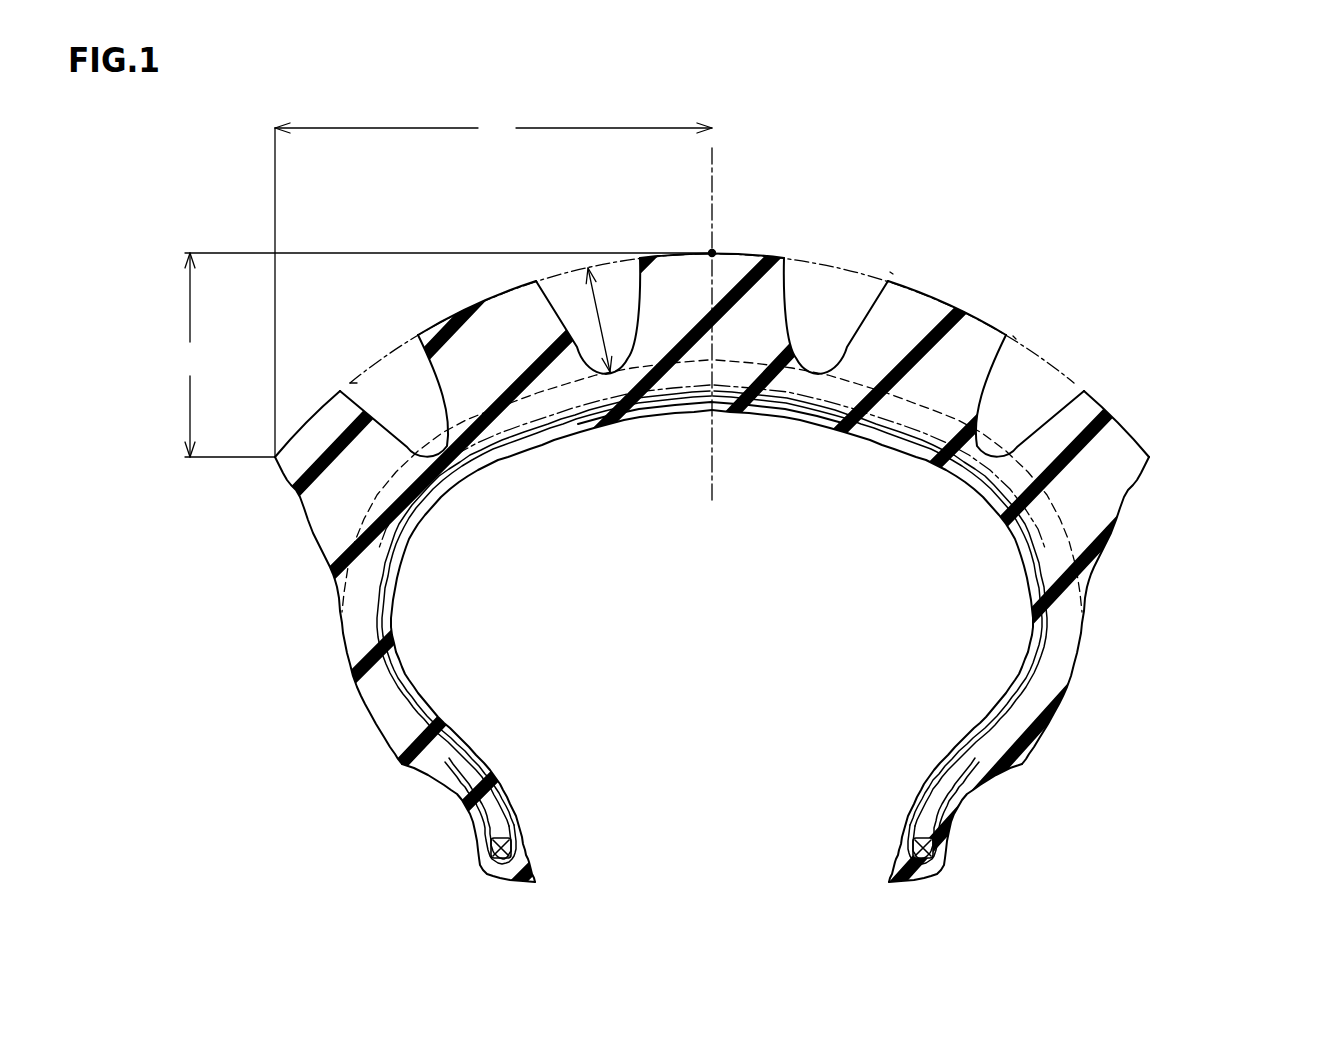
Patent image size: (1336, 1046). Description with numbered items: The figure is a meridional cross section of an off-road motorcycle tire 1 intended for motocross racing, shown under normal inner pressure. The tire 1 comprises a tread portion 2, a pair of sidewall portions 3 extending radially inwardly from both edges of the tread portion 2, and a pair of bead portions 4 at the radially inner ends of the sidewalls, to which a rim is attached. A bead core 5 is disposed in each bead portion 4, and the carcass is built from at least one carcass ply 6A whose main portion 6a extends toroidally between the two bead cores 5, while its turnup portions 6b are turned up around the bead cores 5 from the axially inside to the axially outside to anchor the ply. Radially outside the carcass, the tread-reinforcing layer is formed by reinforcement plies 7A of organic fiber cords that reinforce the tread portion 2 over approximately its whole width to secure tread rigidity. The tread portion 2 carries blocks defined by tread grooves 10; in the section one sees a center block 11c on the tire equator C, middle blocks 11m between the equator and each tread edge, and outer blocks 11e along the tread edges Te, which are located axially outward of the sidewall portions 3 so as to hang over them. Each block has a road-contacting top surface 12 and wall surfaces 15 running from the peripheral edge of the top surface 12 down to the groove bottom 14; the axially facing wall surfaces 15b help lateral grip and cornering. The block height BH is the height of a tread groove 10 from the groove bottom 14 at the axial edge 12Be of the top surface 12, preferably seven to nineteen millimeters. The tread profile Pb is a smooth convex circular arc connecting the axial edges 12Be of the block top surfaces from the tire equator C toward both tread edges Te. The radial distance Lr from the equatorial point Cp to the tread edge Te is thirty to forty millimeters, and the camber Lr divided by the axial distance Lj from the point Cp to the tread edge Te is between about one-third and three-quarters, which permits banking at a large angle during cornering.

The off-road motorcycle tire 1 is at (1062, 195).
The tread portion 2 is at (958, 227).
The sidewall portion 3 is at (1105, 675).
The bead portion 4 is at (878, 826).
The bead core 5 is at (940, 856).
The carcass ply 6A is at (1148, 745).
The main portion 6a is at (1007, 720).
The turnup portion 6b is at (968, 770).
The reinforcement ply 7A is at (950, 465).
The tread groove 10 is at (420, 416).
The center block 11c is at (745, 262).
The middle block 11m is at (985, 340).
The outer block 11e is at (1108, 452).
The top surface 12 is at (940, 303).
The axial edge of top surface 12Be is at (893, 270).
The groove bottom 14 is at (540, 391).
The wall surface 15 is at (987, 392).
The axially facing wall surface 15b is at (870, 335).
The tread edge Te is at (274, 460).
The axial distance Lj is at (493, 287).
The radial distance Lr is at (444, 355).
The tire equator C is at (727, 160).
The equatorial point Cp is at (710, 250).
The tread profile Pb is at (357, 383).
The block height BH is at (597, 322).